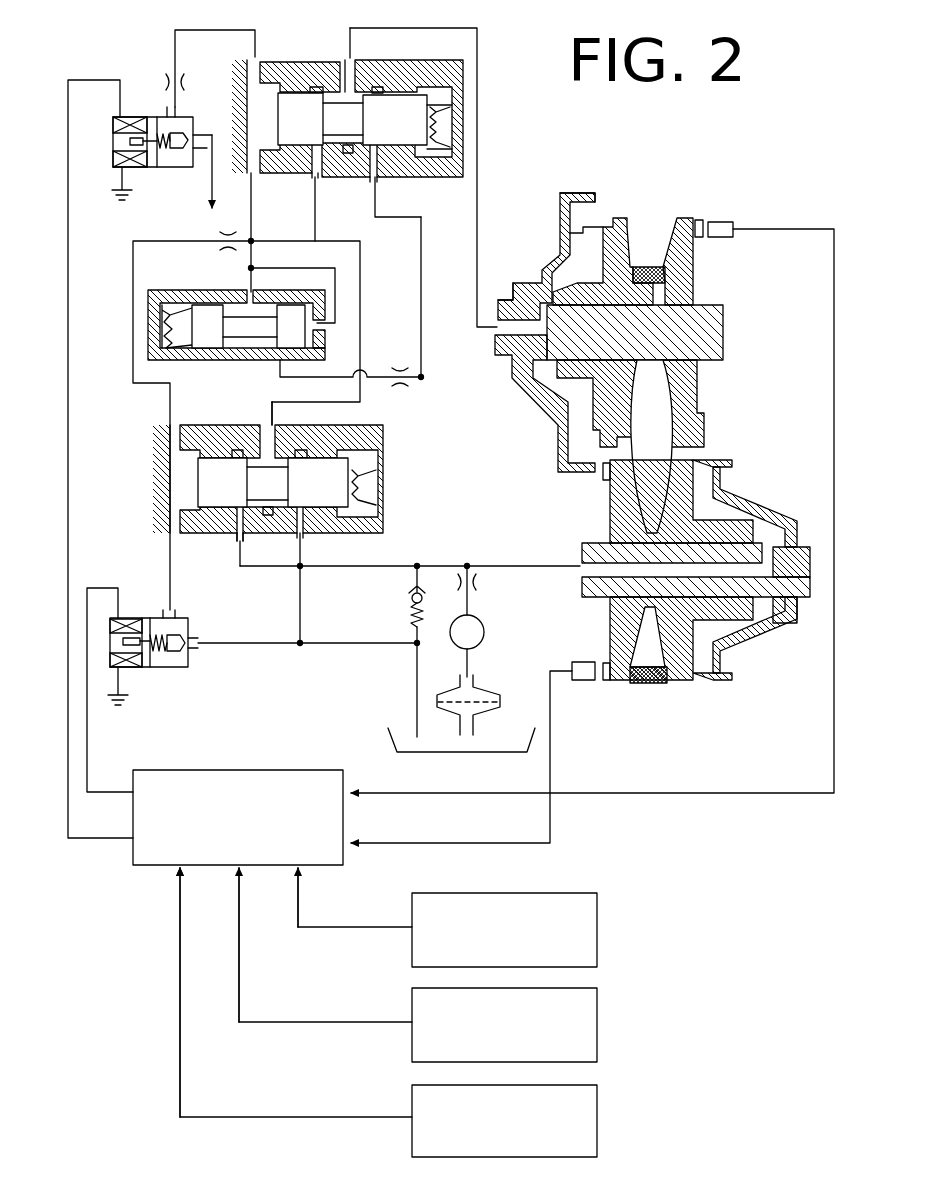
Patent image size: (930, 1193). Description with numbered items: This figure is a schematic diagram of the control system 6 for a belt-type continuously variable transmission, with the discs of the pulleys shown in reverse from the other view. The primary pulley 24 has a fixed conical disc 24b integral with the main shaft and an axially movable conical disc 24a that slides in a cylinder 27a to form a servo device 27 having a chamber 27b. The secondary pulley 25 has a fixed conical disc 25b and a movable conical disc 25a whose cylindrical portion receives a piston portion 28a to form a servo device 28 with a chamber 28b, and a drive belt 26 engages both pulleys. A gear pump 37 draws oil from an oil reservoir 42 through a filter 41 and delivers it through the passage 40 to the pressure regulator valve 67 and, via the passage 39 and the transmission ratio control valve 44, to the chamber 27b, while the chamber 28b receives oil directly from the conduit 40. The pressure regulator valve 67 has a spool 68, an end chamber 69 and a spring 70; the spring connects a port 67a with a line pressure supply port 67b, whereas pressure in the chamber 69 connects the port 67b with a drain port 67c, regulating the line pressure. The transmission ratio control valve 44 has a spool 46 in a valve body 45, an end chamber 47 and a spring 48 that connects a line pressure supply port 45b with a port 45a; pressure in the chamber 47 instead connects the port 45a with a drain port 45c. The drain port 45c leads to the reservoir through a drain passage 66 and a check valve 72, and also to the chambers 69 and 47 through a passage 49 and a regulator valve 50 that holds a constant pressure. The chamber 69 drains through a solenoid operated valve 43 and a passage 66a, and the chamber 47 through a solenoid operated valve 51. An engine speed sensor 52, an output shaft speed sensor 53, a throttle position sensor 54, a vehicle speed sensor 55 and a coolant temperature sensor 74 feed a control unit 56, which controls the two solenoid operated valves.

The hydraulic control system 6 is at (152, 96).
The primary pulley 24 is at (700, 266).
The movable conical disc 24a is at (620, 218).
The fixed conical disc 24b is at (697, 388).
The secondary pulley 25 is at (604, 535).
The movable conical disc 25a is at (686, 684).
The fixed conical disc 25b is at (610, 637).
The drive belt 26 is at (654, 267).
The servo device 27 is at (547, 246).
The cylinder 27a is at (560, 192).
The chamber 27b is at (537, 285).
The servo device 28 is at (741, 491).
The piston portion 28a is at (748, 637).
The chamber 28b is at (745, 525).
The gear pump 37 is at (484, 634).
The passage 39 is at (481, 96).
The passage 40 is at (538, 566).
The filter 41 is at (497, 704).
The oil reservoir 42 is at (510, 752).
The solenoid operated valve 43 is at (168, 667).
The transmission ratio control valve 44 is at (408, 173).
The valve body 45 is at (292, 70).
The port 45a is at (350, 68).
The line pressure supply port 45b is at (312, 168).
The drain port 45c is at (373, 176).
The spool 46 is at (308, 100).
The end chamber 47 is at (240, 70).
The spring 48 is at (440, 106).
The passage 49 is at (363, 375).
The regulator valve 50 is at (218, 355).
The solenoid operated valve 51 is at (113, 155).
The engine speed sensor 52 is at (720, 222).
The output shaft speed sensor 53 is at (584, 682).
The throttle position sensor 54 is at (597, 1030).
The vehicle speed sensor 55 is at (597, 1121).
The control unit 56 is at (310, 770).
The drain passage 66 is at (212, 186).
The passage 66a is at (236, 645).
The pressure regulator valve 67 is at (397, 441).
The port 67a is at (232, 527).
The line pressure supply port 67b is at (264, 432).
The drain port 67c is at (295, 527).
The spool 68 is at (325, 500).
The end chamber 69 is at (165, 484).
The spring 70 is at (378, 506).
The check valve 72 is at (410, 600).
The coolant temperature sensor 74 is at (597, 935).